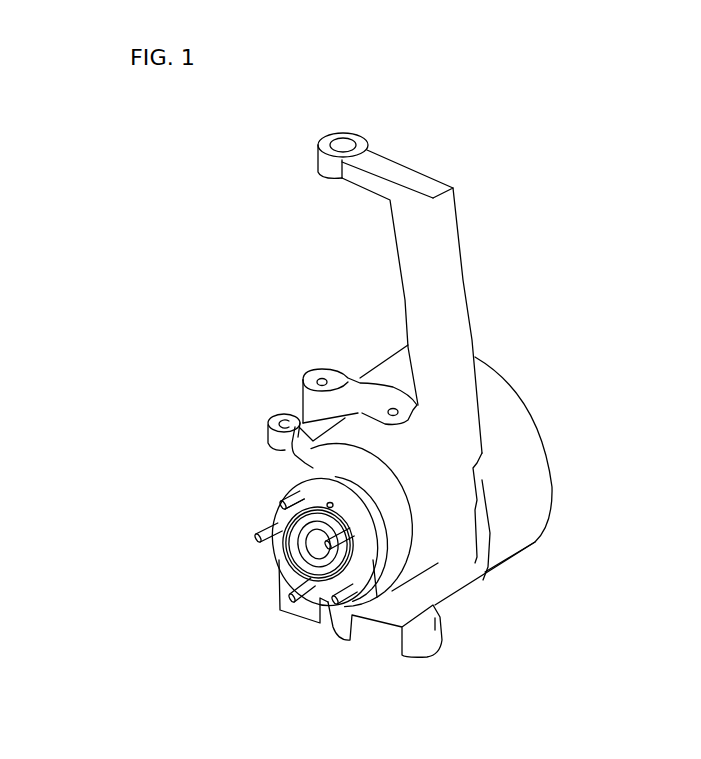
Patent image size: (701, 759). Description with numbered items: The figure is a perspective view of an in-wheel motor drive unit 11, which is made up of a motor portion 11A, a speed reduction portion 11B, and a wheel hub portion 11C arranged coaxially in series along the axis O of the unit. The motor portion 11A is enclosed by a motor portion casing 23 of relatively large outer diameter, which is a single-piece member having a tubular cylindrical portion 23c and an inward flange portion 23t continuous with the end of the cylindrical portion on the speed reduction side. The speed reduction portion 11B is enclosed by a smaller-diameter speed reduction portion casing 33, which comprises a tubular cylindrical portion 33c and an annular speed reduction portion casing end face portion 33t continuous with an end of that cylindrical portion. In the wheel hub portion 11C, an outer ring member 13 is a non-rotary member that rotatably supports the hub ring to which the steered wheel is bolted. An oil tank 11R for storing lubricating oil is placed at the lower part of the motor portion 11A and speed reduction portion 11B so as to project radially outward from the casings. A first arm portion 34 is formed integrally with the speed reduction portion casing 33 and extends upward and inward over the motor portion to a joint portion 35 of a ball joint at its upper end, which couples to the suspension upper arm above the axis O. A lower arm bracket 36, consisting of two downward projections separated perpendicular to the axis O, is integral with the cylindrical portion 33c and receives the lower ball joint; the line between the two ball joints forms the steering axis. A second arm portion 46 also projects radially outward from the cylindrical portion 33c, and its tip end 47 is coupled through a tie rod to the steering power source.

The in-wheel motor drive unit 11 is at (547, 168).
The motor portion 11A is at (382, 352).
The speed reduction portion 11B is at (370, 432).
The wheel hub portion 11C is at (264, 503).
The oil tank 11R is at (287, 583).
The outer ring member 13 is at (377, 597).
The motor portion casing 23 is at (633, 573).
The cylindrical portion 23c is at (515, 542).
The inward flange portion 23t is at (480, 560).
The speed reduction portion casing 33 is at (218, 330).
The cylindrical portion 33c is at (358, 420).
The speed reduction portion casing end face portion 33t is at (333, 458).
The first arm portion 34 is at (453, 267).
The joint portion 35 is at (318, 155).
The lower arm bracket 36 is at (345, 623).
The second arm portion 46 is at (285, 448).
The tip end 47 is at (270, 417).
The axis O is at (310, 550).